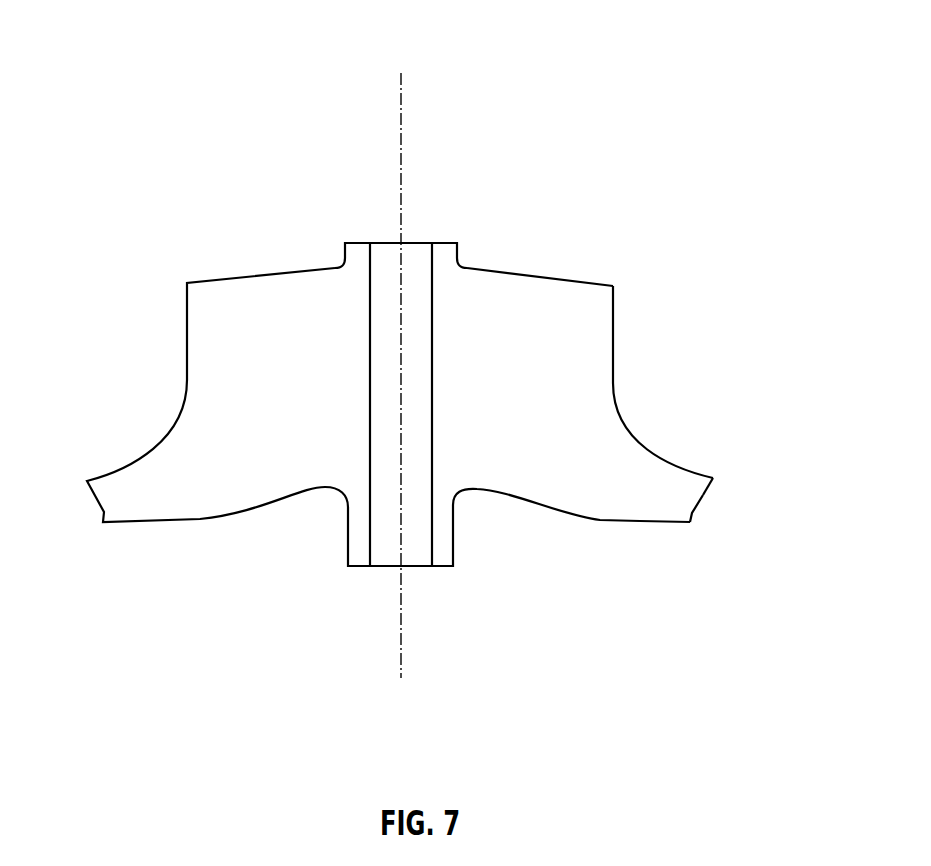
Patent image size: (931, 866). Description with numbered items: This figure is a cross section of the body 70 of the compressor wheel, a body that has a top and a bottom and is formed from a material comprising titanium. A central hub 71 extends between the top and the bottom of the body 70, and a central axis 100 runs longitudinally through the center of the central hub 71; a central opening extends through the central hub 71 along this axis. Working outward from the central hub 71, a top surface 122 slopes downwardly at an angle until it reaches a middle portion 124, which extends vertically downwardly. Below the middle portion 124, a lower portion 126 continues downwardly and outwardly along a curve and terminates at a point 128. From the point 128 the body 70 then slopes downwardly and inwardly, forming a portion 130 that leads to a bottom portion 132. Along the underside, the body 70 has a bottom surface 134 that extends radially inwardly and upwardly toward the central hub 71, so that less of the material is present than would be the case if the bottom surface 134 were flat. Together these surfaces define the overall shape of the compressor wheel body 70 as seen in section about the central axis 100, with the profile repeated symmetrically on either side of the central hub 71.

The central axis 100 is at (402, 88).
The body 70 is at (443, 242).
The central hub 71 is at (352, 242).
The top surface 122 is at (577, 277).
The middle portion 124 is at (615, 355).
The lower portion 126 is at (650, 452).
The point 128 is at (712, 478).
The portion 130 is at (702, 500).
The bottom portion 132 is at (663, 523).
The bottom surface 134 is at (580, 518).